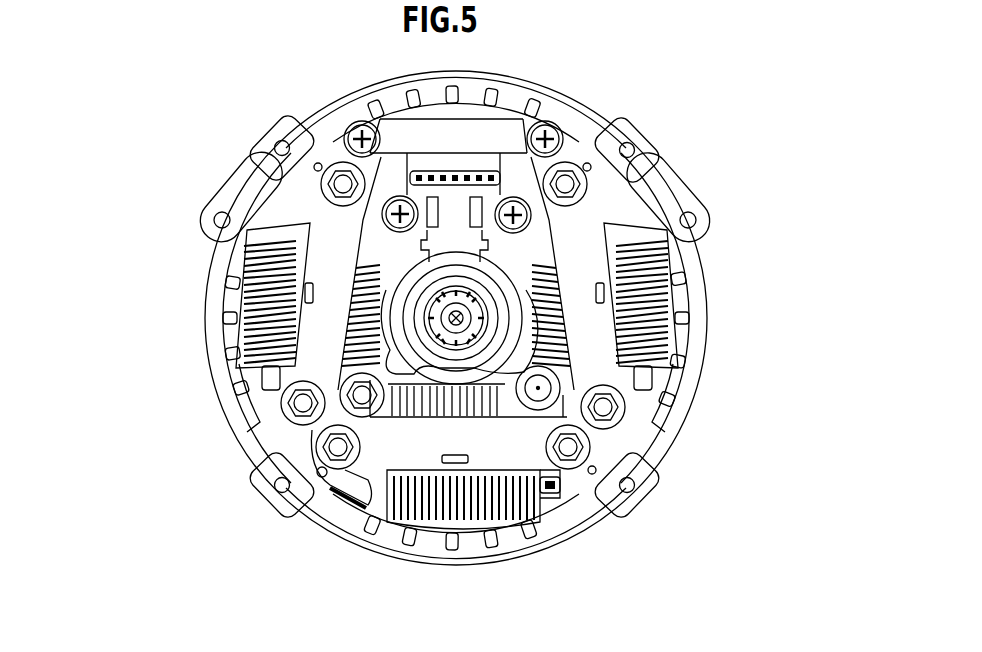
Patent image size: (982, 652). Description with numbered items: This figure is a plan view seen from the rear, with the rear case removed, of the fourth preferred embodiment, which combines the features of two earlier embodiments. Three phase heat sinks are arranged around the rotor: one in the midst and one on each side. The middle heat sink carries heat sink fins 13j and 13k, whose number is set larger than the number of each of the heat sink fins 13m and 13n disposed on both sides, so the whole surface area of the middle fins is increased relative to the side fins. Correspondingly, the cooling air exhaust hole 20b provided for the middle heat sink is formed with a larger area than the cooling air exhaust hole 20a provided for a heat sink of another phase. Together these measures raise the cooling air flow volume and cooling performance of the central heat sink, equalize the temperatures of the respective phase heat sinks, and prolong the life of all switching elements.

The heat sink fins 13m is at (238, 200).
The cooling air exhaust hole 20a is at (227, 297).
The heat sink fins 13n is at (240, 377).
The heat sink fins 13j is at (372, 488).
The cooling air exhaust hole 20b is at (440, 530).
The heat sink fins 13k is at (533, 510).